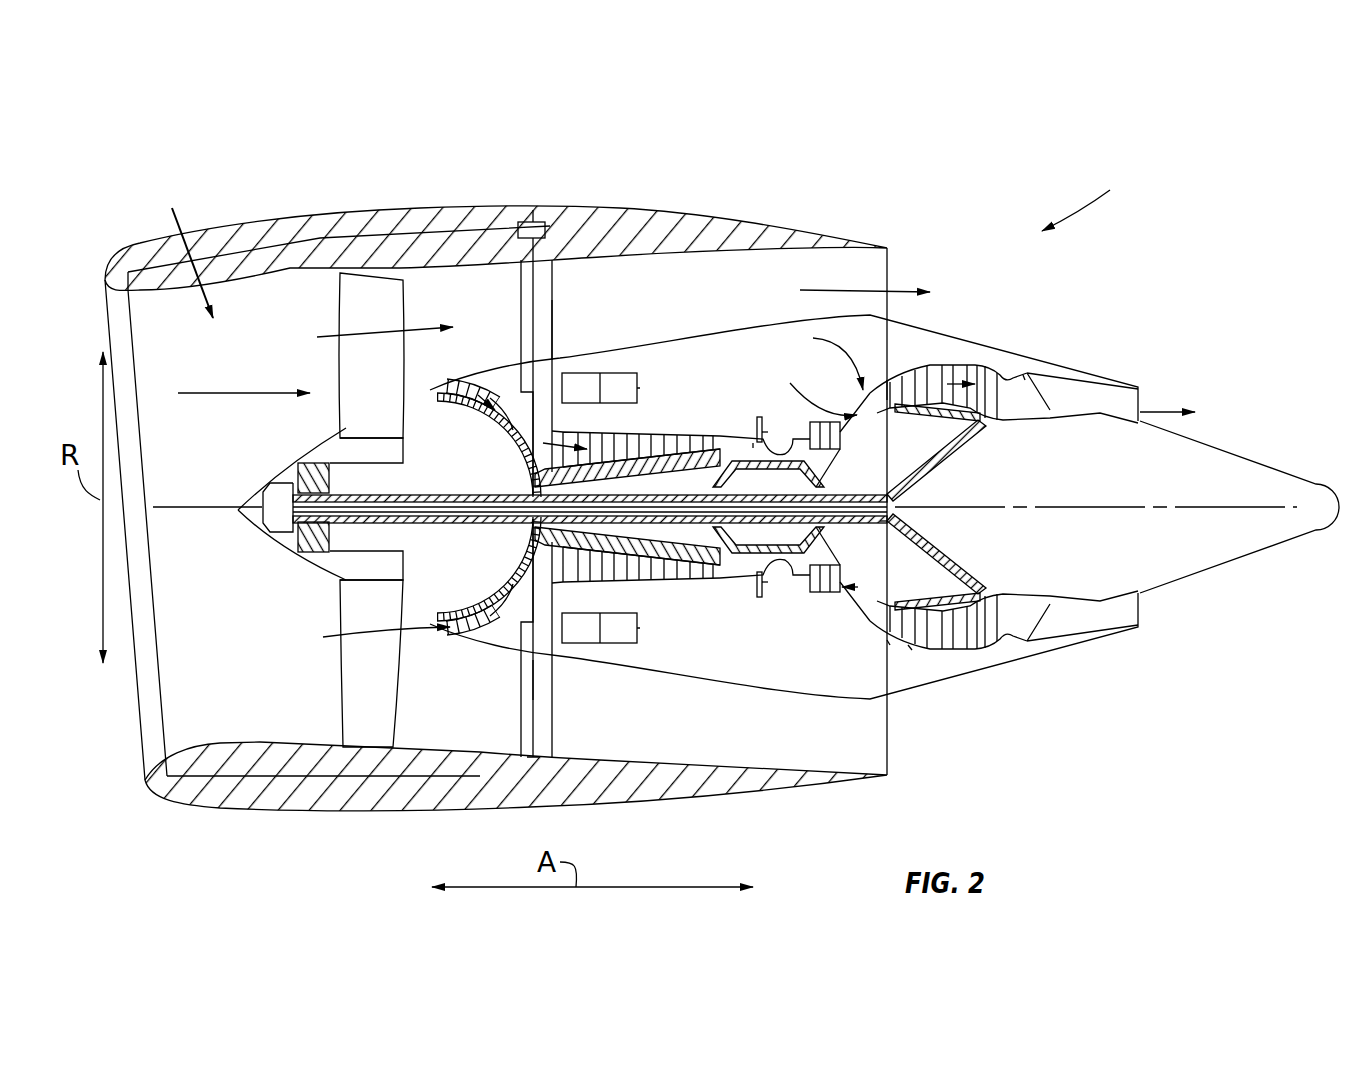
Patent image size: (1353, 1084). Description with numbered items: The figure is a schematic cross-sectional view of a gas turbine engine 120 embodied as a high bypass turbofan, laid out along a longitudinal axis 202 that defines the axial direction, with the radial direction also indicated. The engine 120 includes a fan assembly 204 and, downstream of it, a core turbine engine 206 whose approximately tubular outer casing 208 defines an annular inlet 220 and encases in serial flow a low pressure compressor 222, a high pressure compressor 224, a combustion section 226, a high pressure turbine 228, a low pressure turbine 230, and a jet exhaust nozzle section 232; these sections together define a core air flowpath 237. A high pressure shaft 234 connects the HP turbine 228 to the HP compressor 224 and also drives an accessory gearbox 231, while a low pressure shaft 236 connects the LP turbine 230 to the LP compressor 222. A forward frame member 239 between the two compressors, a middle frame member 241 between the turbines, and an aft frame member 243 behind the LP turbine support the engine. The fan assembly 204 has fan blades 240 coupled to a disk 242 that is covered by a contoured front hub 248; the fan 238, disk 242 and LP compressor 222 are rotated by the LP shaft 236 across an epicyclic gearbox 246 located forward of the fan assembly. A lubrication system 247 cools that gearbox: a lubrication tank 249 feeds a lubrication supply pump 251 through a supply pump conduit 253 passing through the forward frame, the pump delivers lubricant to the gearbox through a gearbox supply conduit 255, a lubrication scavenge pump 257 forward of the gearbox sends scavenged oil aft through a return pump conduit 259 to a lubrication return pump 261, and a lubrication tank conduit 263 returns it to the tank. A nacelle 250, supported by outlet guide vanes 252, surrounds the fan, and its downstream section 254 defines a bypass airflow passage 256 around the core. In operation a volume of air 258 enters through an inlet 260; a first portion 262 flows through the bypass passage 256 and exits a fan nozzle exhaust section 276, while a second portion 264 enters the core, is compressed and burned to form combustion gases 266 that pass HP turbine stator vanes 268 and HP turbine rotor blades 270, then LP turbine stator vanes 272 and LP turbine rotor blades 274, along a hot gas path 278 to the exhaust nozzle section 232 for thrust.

The gas turbine engine 120 is at (1100, 204).
The longitudinal axis 202 is at (1107, 508).
The fan assembly 204 is at (182, 247).
The core turbine engine 206 is at (685, 427).
The outer casing 208 is at (733, 688).
The annular inlet 220 is at (323, 637).
The low pressure compressor 222 is at (483, 645).
The high pressure compressor 224 is at (600, 572).
The combustion section 226 is at (773, 590).
The high pressure turbine 228 is at (913, 570).
The low pressure turbine 230 is at (957, 650).
The accessory gearbox 231 is at (620, 407).
The jet exhaust nozzle section 232 is at (1040, 636).
The high pressure shaft 234 is at (753, 443).
The low pressure shaft 236 is at (850, 487).
The core air flowpath 237 is at (533, 683).
The fan 238 is at (286, 510).
The forward frame member 239 is at (553, 340).
The fan blades 240 is at (337, 683).
The middle frame member 241 is at (886, 390).
The disk 242 is at (357, 447).
The aft frame member 243 is at (1023, 390).
The gearbox 246 is at (275, 490).
The lubrication system 247 is at (540, 218).
The front hub 248 is at (242, 530).
The lubrication tank 249 is at (528, 215).
The nacelle 250 is at (350, 811).
The lubrication supply pump 251 is at (593, 373).
The outlet guide vanes 252 is at (540, 313).
The supply pump conduit 253 is at (535, 298).
The downstream section of nacelle 254 is at (765, 226).
The gearbox supply conduit 255 is at (530, 437).
The bypass airflow passage 256 is at (729, 298).
The lubrication scavenge pump 257 is at (270, 483).
The volume of air 258 is at (233, 393).
The return pump conduit 259 is at (540, 590).
The inlet 260 is at (137, 742).
The lubrication return pump 261 is at (590, 647).
The first portion of air 262 is at (323, 337).
The lubrication tank conduit 263 is at (535, 730).
The second portion of air 264 is at (423, 390).
The combustion gases 266 is at (937, 373).
The HP turbine stator vanes 268 is at (793, 591).
The HP turbine rotor blades 270 is at (885, 521).
The LP turbine stator vanes 272 is at (887, 644).
The LP turbine rotor blades 274 is at (910, 648).
The fan nozzle exhaust section 276 is at (865, 262).
The hot gas path 278 is at (816, 355).